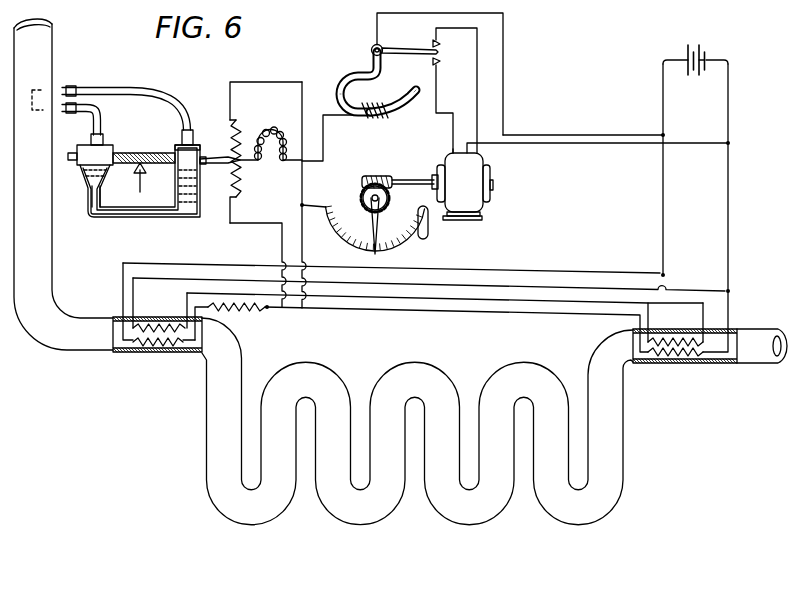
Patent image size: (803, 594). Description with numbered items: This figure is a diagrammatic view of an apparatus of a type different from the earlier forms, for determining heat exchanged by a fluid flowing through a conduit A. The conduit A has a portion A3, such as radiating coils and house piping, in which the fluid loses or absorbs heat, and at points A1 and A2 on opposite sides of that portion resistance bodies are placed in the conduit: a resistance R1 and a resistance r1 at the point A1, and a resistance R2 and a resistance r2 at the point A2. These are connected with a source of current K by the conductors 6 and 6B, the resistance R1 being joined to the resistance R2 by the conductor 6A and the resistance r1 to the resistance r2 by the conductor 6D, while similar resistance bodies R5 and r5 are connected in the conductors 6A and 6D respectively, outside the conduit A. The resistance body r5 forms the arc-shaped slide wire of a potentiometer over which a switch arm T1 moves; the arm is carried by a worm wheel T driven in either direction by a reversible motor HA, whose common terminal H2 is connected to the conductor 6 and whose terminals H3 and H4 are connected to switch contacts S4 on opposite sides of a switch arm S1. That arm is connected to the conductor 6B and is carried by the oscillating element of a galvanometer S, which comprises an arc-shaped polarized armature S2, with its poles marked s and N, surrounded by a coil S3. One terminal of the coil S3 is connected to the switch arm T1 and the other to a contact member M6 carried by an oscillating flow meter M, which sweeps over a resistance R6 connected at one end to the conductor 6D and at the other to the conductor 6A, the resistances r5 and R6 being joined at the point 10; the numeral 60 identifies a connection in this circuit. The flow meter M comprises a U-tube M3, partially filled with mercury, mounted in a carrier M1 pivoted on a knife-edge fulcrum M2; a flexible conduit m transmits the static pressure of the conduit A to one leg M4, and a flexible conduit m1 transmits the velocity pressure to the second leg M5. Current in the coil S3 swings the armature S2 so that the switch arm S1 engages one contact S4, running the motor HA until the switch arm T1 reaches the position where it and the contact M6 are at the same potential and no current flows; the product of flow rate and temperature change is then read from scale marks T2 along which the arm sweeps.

The conduit A is at (63, 184).
The first conduit point A1 is at (167, 354).
The second conduit point A2 is at (660, 365).
The heat-exchanging conduit portion A3 is at (418, 421).
The flexible conduit m is at (113, 88).
The flexible conduit m1 is at (102, 110).
The oscillating flow meter M is at (95, 174).
The carrier M1 is at (150, 152).
The knife-edge fulcrum M2 is at (149, 183).
The U-tube M3 is at (95, 215).
The U-tube leg M4 is at (200, 185).
The second U-tube leg M5 is at (88, 192).
The contact member M6 is at (232, 157).
The resistance R6 is at (238, 128).
The conductor 60 is at (258, 256).
The connection point 10 is at (304, 204).
The conductor 6D is at (290, 310).
The conductor 6A is at (363, 313).
The conductor 6 is at (663, 193).
The conductor 6B is at (728, 193).
The worm wheel T is at (390, 198).
The switch arm T1 is at (372, 232).
The scale marks T2 is at (345, 243).
The slide wire resistance r5 is at (428, 224).
The galvanometer S is at (357, 75).
The magnet pole s is at (349, 95).
The switch arm S1 is at (406, 49).
The polarized armature S2 is at (404, 109).
The coil S3 is at (381, 103).
The switch contacts S4 is at (441, 55).
The north pole N is at (417, 91).
The common motor terminal H2 is at (465, 182).
The reversible motor HA is at (462, 203).
The motor terminal H3 is at (452, 158).
The motor terminal H4 is at (481, 158).
The source of current K is at (695, 48).
The resistance body R5 is at (256, 311).
The resistance R1 is at (142, 336).
The resistance r1 is at (143, 324).
The resistance R2 is at (679, 351).
The resistance r2 is at (670, 336).